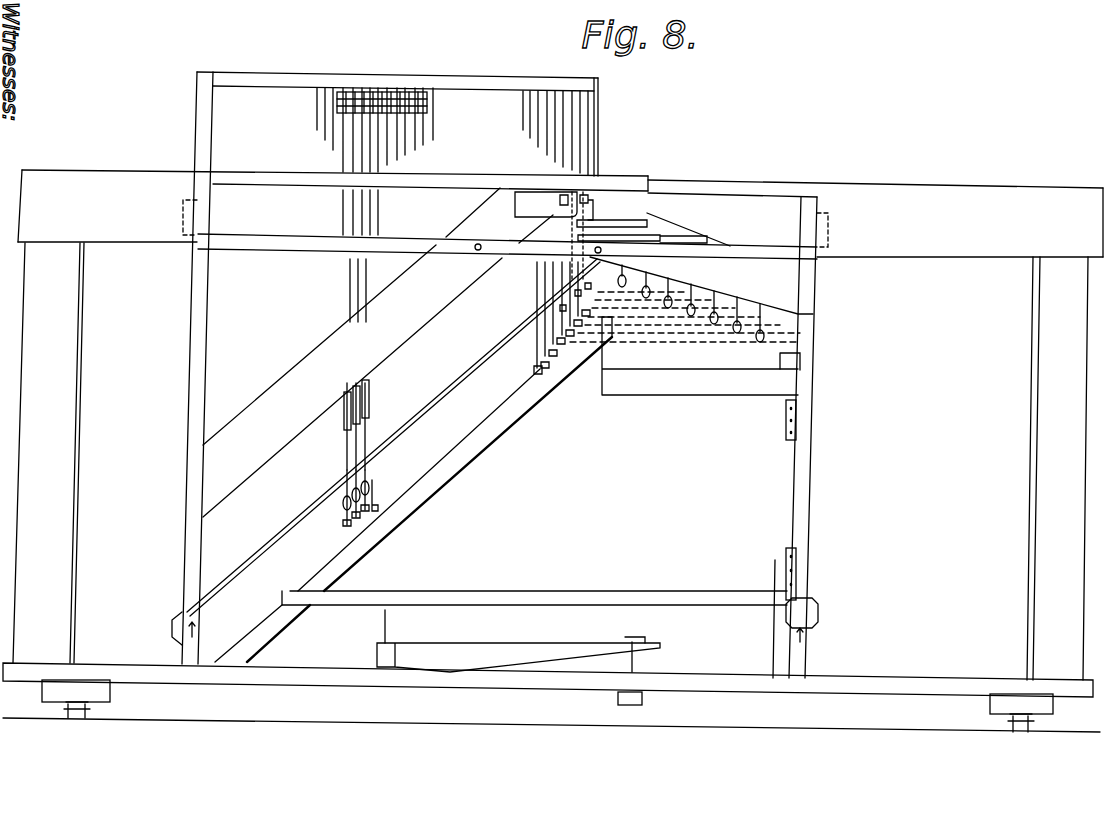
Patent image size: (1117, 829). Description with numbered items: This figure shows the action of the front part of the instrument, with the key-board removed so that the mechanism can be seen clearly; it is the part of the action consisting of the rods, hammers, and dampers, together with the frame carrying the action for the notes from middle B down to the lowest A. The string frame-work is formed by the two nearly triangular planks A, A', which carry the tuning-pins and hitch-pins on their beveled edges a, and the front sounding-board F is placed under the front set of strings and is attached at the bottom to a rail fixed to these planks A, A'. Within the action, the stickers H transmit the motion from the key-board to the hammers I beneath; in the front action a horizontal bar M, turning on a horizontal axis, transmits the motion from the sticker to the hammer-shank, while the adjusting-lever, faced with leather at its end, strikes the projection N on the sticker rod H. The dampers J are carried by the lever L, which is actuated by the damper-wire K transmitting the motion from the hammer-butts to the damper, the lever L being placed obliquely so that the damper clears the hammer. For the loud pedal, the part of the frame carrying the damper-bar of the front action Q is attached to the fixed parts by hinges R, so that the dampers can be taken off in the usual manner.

The plank A is at (1065, 468).
The plank A' is at (42, 453).
The beveled edge a is at (1090, 557).
The projection N is at (366, 90).
The stickers H is at (588, 131).
The damper-bar of the front action Q is at (399, 460).
The front sounding-board F is at (601, 431).
The hinges R is at (779, 500).
The horizontal bar M is at (622, 237).
The hammers I is at (334, 508).
The dampers J is at (482, 390).
The damper-wire K is at (368, 410).
The lever carrying the damper L is at (534, 372).